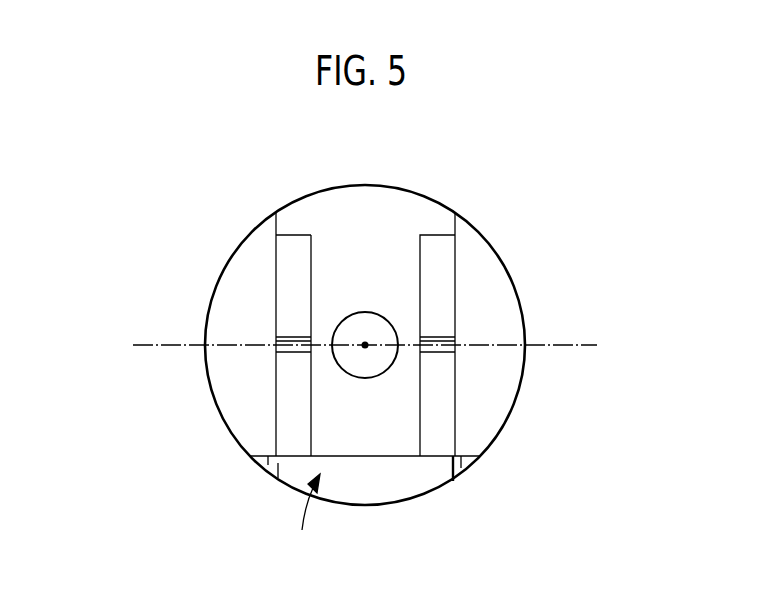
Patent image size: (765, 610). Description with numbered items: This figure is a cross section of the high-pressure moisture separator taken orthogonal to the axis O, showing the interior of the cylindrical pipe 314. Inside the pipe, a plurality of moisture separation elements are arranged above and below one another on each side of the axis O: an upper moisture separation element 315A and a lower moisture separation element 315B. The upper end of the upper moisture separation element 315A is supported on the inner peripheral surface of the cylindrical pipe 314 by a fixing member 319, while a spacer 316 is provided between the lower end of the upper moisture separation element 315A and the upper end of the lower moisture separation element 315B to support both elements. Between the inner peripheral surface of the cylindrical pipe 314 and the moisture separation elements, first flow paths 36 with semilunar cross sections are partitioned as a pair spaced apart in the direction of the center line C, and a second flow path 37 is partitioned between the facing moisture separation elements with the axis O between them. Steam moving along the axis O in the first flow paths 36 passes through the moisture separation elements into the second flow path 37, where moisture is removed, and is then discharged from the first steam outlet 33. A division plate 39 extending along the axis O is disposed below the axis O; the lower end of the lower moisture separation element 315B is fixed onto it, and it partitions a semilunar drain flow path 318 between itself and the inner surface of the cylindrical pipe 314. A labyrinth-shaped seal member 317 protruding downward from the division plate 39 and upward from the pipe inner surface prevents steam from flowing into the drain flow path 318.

The cylindrical pipe 314 is at (228, 260).
The upper moisture separation element 315A is at (443, 262).
The lower moisture separation element 315B is at (440, 403).
The spacer 316 is at (275, 342).
The labyrinth-shaped seal member 317 is at (471, 462).
The drain flow path 318 is at (298, 519).
The fixing member 319 is at (457, 219).
The No. 1 steam outlet 33 is at (385, 374).
The first flow path 36 is at (257, 383).
The second flow path 37 is at (358, 273).
The division plate 39 is at (393, 458).
The axis O is at (367, 343).
The center line C is at (553, 345).